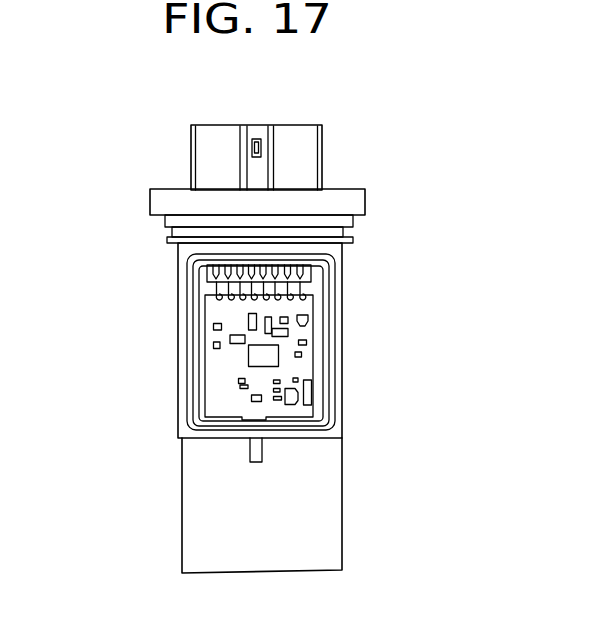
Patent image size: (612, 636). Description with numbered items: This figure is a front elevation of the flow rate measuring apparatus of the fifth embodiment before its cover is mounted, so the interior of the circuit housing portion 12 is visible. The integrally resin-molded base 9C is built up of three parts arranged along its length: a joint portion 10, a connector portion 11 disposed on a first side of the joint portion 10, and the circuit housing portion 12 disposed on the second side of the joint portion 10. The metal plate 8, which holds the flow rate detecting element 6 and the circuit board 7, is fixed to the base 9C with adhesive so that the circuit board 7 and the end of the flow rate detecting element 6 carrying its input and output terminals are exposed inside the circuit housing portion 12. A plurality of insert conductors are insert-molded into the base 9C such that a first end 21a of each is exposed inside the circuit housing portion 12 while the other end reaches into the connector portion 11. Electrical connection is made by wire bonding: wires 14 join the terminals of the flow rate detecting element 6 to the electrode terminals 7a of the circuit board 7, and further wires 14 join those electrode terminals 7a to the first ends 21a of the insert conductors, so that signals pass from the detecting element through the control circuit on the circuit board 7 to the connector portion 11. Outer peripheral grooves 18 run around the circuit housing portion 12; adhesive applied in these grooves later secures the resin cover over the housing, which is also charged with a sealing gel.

The flow rate detecting element 6 is at (250, 447).
The circuit board 7 is at (218, 362).
The electrode terminals 7a is at (215, 296).
The metal plate 8 is at (197, 505).
The base 9C is at (182, 186).
The joint portion 10 is at (355, 223).
The connector portion 11 is at (327, 157).
The circuit housing portion 12 is at (338, 330).
The wires 14 is at (213, 285).
The outer peripheral grooves 18 is at (187, 397).
The first ends 21a is at (191, 268).